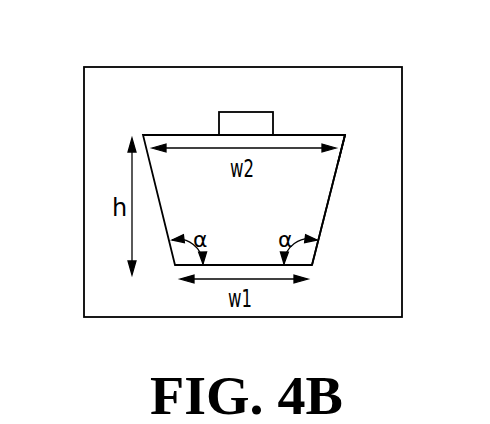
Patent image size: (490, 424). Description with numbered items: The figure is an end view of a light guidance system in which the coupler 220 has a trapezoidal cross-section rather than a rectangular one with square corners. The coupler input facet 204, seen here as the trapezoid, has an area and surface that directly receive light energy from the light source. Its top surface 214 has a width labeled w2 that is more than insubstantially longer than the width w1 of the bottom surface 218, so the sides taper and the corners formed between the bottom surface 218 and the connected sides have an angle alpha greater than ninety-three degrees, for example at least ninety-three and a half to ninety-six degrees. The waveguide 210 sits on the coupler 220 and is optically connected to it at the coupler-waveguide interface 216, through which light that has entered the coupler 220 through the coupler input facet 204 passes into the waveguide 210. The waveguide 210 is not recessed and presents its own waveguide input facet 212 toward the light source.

The coupler input facet 204 is at (262, 228).
The waveguide 210 is at (262, 112).
The waveguide input facet 212 is at (236, 127).
The top surface 214 is at (313, 132).
The coupler-waveguide interface 216 is at (218, 135).
The bottom surface 218 is at (193, 266).
The coupler 220 is at (307, 214).